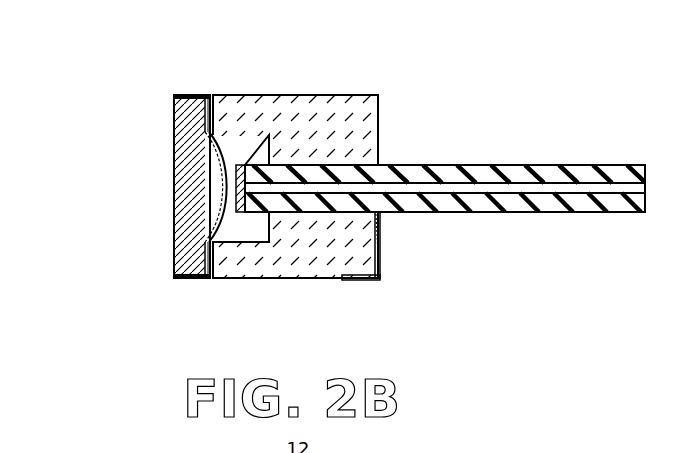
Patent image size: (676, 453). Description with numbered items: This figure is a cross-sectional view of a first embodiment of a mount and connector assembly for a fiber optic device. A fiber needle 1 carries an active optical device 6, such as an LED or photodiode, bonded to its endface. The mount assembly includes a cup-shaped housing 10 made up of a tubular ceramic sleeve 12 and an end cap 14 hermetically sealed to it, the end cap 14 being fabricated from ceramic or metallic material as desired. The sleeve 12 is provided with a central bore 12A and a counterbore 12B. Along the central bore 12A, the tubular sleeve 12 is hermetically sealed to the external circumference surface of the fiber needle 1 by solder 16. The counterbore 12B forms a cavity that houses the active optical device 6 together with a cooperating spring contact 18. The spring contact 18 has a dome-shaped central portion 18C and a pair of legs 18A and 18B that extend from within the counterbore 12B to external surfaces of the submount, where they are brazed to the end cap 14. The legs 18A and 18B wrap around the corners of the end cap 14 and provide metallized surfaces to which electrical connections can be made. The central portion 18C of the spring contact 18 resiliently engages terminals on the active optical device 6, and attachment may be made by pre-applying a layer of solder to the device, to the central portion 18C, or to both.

The fiber needle 1 is at (445, 137).
The active optical device 6 is at (231, 117).
The cup-shaped housing 10 is at (68, 47).
The tubular ceramic sleeve 12 is at (295, 150).
The central bore 12A is at (408, 155).
The counterbore 12B is at (240, 280).
The end cap 14 is at (142, 186).
The solder 16 is at (394, 255).
The spring contact 18 is at (156, 186).
The leg 18A is at (166, 311).
The leg 18B is at (160, 56).
The dome-shaped central portion 18C is at (158, 187).